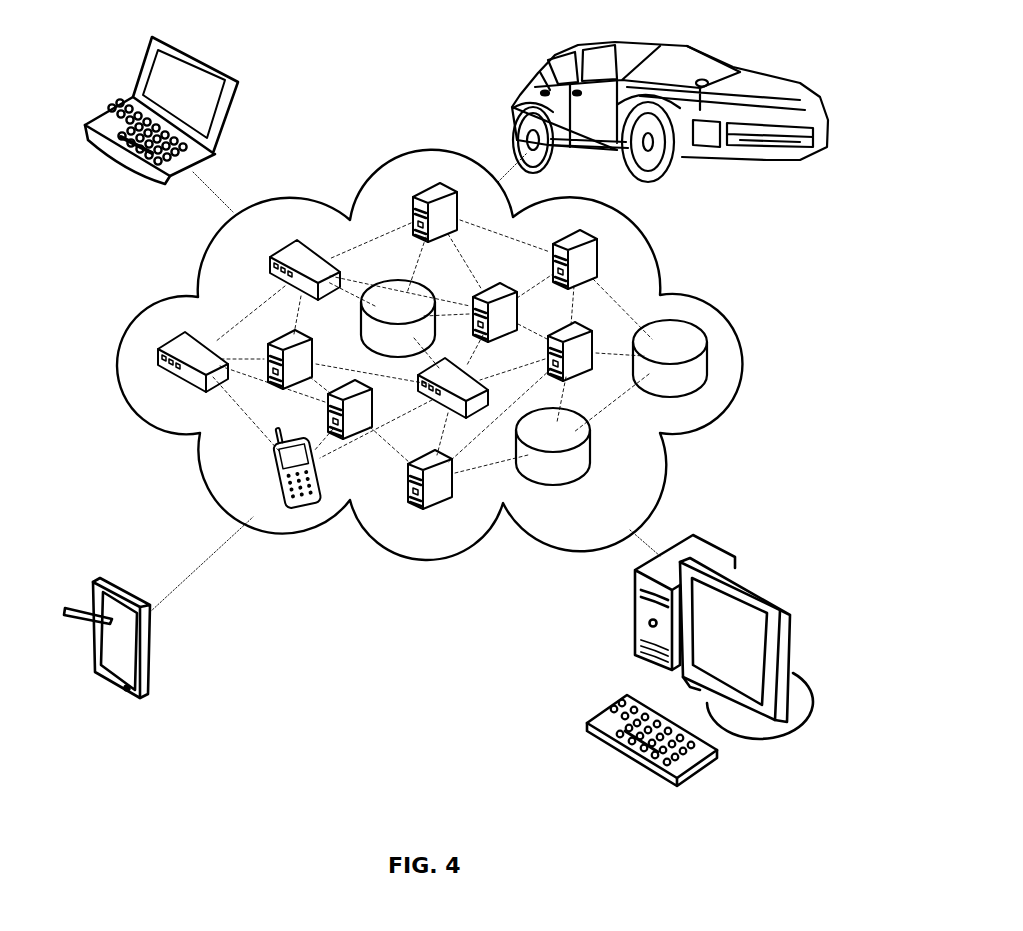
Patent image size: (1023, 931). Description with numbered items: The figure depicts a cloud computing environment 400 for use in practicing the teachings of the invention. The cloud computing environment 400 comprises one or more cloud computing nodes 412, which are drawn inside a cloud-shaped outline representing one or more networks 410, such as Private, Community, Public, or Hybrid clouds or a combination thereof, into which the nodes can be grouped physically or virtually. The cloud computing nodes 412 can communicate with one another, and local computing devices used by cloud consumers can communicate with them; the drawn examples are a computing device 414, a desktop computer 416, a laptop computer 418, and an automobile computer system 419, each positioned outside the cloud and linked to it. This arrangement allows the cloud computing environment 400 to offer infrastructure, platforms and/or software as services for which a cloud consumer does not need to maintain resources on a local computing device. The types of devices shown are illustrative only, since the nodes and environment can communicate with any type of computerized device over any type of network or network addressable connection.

The cloud computing environment 400 is at (880, 110).
The network 410 is at (415, 558).
The cloud computing node 412 is at (358, 466).
The computing device 414 is at (106, 684).
The desktop computer 416 is at (746, 745).
The laptop computer 418 is at (145, 180).
The automobile computer system 419 is at (760, 163).